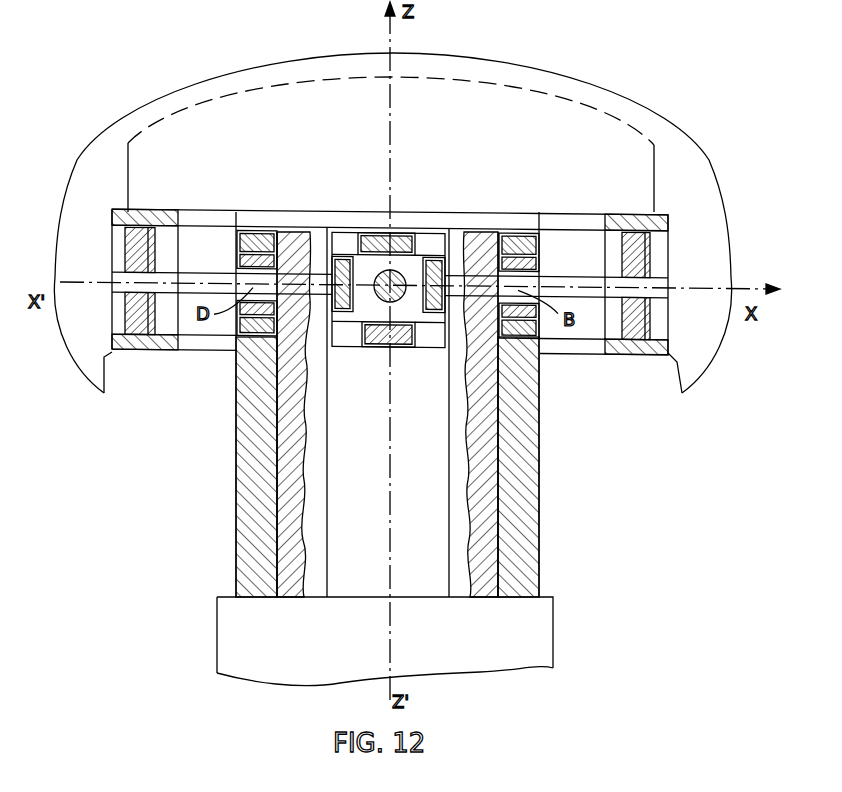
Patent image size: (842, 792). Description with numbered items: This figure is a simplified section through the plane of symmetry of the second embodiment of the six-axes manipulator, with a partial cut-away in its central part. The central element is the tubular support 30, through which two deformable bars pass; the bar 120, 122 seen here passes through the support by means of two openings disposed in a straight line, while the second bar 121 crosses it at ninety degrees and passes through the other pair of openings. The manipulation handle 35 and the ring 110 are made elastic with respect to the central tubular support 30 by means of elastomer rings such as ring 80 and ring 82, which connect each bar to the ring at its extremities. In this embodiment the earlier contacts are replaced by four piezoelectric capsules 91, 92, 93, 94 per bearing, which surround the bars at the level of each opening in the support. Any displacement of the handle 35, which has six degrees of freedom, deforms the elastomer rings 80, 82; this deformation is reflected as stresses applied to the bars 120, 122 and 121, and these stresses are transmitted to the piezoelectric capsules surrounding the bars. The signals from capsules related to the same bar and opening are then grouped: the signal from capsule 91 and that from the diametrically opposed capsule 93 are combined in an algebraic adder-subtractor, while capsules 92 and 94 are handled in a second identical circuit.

The central tubular support 30 is at (528, 456).
The manipulation handle 35 is at (690, 153).
The elastomer ring 80 is at (645, 266).
The elastomer ring 82 is at (130, 262).
The piezoelectric capsule 91 is at (258, 238).
The piezoelectric capsule 92 is at (446, 258).
The piezoelectric capsule 93 is at (256, 332).
The piezoelectric capsule 94 is at (343, 262).
The ring 110 is at (148, 222).
The bar 120 is at (566, 279).
The bar 121 is at (398, 303).
The bar 122 is at (203, 278).